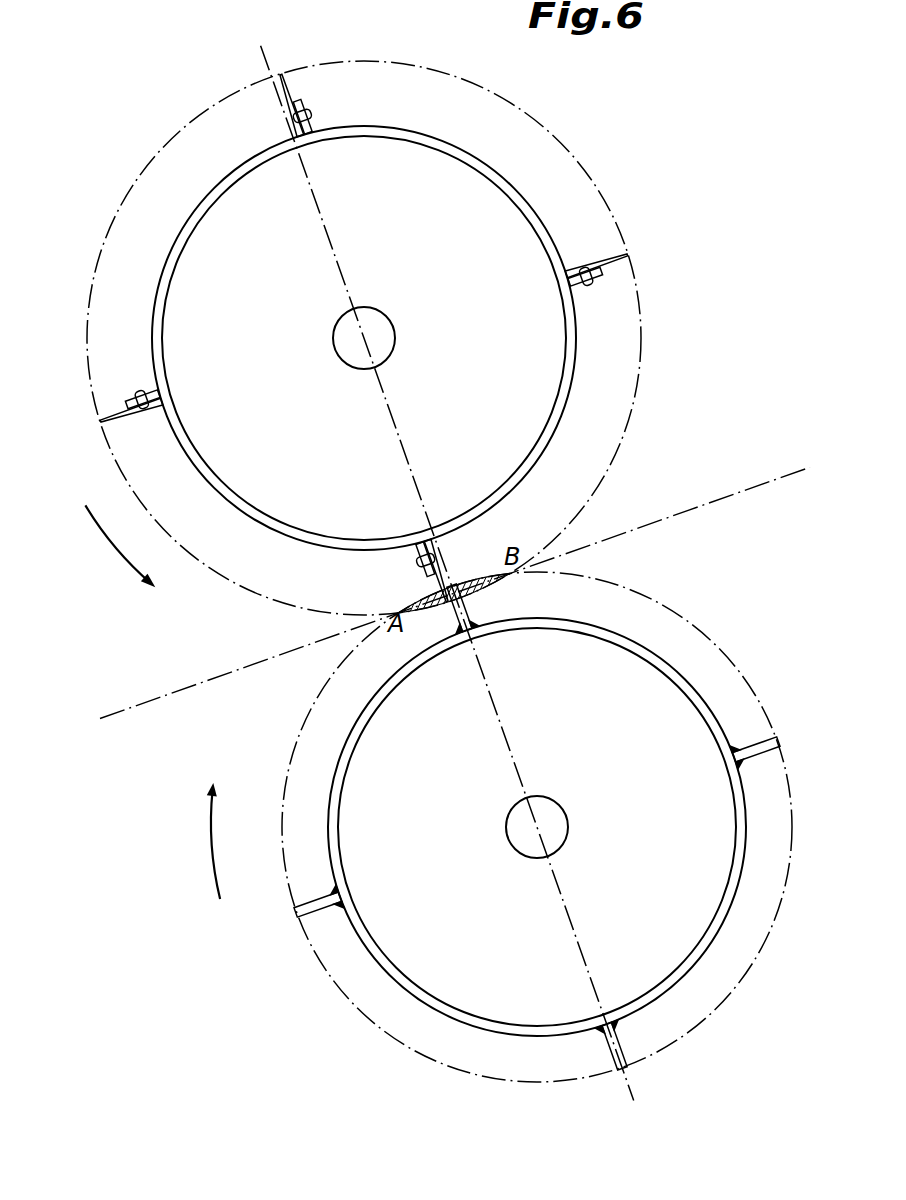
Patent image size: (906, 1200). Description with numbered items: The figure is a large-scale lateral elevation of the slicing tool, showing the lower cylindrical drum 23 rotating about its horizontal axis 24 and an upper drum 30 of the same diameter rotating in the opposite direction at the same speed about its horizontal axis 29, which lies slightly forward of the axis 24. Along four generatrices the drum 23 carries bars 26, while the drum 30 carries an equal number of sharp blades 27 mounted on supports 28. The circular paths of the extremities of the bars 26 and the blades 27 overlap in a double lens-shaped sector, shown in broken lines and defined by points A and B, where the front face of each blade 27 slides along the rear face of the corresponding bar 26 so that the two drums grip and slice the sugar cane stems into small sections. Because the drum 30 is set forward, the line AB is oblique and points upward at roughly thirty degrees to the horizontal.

The cylindrical drum 23 is at (717, 936).
The axis 24 is at (568, 832).
The bars 26 is at (468, 607).
The sharp blades 27 is at (280, 92).
The supports 28 is at (312, 96).
The horizontal axis 29 is at (387, 346).
The drum 30 is at (520, 182).